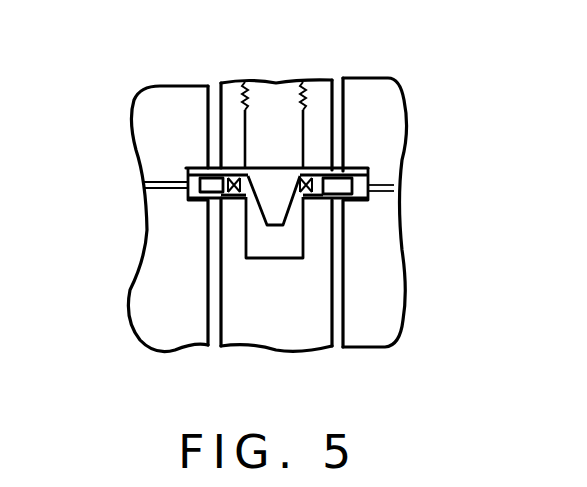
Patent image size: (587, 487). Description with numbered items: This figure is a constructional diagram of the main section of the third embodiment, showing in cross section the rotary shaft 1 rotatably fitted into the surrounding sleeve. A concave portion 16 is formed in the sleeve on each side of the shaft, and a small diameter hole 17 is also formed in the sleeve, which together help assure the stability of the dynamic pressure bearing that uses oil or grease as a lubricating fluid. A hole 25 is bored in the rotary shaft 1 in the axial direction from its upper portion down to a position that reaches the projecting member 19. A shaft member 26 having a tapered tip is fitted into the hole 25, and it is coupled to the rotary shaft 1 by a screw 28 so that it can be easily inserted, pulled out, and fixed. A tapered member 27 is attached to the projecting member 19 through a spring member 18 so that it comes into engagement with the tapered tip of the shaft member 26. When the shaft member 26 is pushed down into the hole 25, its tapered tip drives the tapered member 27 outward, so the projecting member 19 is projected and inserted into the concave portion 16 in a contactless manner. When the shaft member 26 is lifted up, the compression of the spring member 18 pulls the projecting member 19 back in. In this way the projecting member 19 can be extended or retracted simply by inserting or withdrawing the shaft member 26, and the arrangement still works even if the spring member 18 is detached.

The rotary shaft 1 is at (324, 96).
The concave portion 16 is at (188, 172).
The small diameter hole 17 is at (158, 192).
The spring member 18 is at (345, 214).
The projecting member 19 is at (360, 168).
The hole 25 is at (257, 232).
The shaft member 26 is at (277, 102).
The tapered member 27 is at (308, 196).
The screw 28 is at (245, 96).